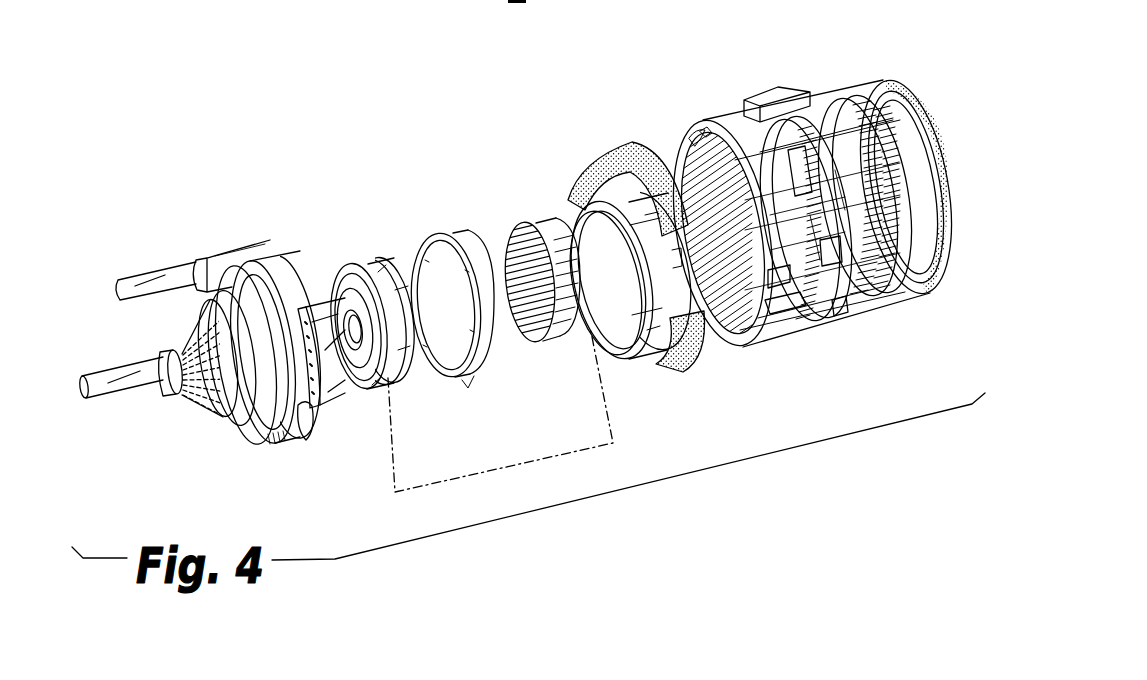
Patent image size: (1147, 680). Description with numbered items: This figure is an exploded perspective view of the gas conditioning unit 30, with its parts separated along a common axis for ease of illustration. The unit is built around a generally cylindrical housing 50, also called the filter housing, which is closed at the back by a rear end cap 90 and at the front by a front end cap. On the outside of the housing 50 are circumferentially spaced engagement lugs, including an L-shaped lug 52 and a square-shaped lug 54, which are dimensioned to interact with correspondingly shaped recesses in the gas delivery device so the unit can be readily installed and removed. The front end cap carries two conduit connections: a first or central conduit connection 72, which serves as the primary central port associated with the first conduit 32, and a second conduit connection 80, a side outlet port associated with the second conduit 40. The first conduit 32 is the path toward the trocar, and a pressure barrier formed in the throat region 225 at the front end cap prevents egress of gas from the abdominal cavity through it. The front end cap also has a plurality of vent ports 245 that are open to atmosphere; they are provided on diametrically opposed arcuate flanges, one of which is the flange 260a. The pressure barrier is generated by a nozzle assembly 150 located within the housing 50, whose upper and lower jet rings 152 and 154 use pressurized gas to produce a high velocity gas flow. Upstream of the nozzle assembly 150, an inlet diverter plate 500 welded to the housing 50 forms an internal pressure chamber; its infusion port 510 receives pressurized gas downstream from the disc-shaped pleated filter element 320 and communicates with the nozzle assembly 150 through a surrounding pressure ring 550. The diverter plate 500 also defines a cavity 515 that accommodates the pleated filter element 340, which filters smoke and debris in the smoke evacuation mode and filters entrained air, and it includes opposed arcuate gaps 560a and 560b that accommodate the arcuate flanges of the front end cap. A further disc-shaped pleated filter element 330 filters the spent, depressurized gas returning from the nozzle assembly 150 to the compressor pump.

The gas conditioning unit 30 is at (318, 138).
The first conduit 32 is at (108, 393).
The second conduit 40 is at (140, 282).
The housing 50 is at (788, 347).
The L-shaped lug 52 is at (763, 92).
The square-shaped lug 54 is at (838, 300).
The central conduit connection 72 is at (166, 355).
The second conduit connection 80 is at (208, 284).
The rear end cap 90 is at (943, 290).
The nozzle assembly 150 is at (395, 400).
The upper jet ring 152 is at (346, 268).
The lower jet ring 154 is at (380, 258).
The throat region 225 is at (203, 390).
The vent ports 245 is at (304, 432).
The arcuate flange 260a is at (348, 388).
The disc-shaped pleated filter element 320 is at (677, 158).
The disc-shaped pleated filter element 330 is at (853, 130).
The disc-shaped pleated filter element 340 is at (534, 360).
The inlet diverter plate 500 is at (664, 385).
The infusion port 510 is at (604, 335).
The cavity 515 is at (572, 232).
The pressure ring 550 is at (434, 224).
The arcuate gap 560a is at (700, 345).
The arcuate gap 560b is at (568, 207).